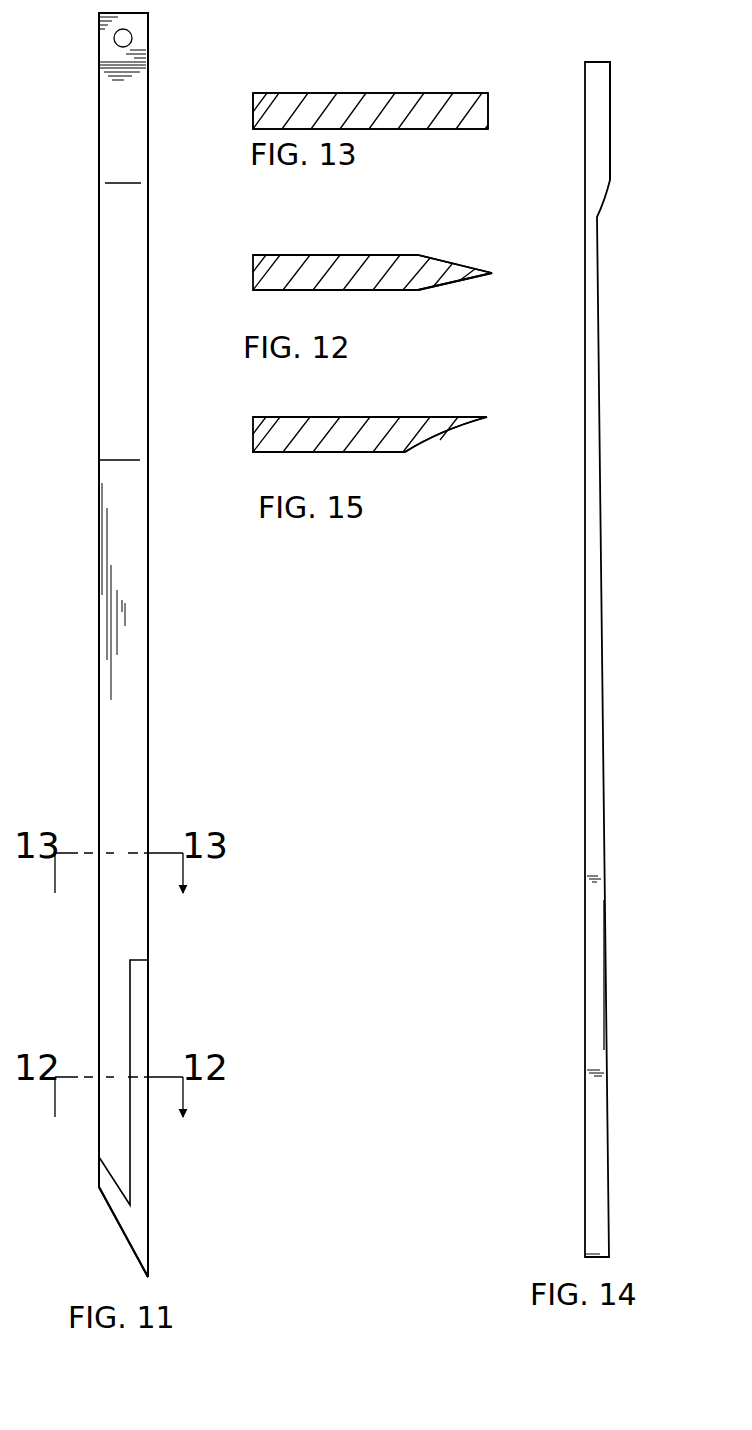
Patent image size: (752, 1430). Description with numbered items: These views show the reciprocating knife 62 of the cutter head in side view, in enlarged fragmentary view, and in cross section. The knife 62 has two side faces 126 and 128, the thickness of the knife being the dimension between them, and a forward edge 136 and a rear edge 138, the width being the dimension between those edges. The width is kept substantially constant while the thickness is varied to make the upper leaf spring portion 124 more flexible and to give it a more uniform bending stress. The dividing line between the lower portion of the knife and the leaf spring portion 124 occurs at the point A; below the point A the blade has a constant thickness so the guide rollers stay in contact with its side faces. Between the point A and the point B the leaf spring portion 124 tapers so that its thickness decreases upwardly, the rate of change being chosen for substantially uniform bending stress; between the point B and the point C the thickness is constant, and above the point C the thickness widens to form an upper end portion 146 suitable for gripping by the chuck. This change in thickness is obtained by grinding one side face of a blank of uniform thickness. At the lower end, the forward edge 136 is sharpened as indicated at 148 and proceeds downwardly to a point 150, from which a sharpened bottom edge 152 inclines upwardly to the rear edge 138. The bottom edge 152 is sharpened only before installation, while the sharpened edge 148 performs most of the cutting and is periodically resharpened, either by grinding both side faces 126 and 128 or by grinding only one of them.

In FIG. 11, the knife 62 is at (133, 933).
In FIG. 14, the knife 62 is at (598, 962).
In FIG. 11, the upper leaf spring portion 124 is at (123, 645).
In FIG. 13, the upper leaf spring portion 124 is at (370, 111).
In FIG. 12, the upper leaf spring portion 124 is at (372, 272).
In FIG. 15, the upper leaf spring portion 124 is at (370, 434).
In FIG. 14, the upper leaf spring portion 124 is at (600, 643).
In FIG. 11, the side face 126 is at (130, 637).
In FIG. 13, the side face 126 is at (410, 129).
In FIG. 12, the side face 126 is at (358, 290).
In FIG. 15, the side face 126 is at (340, 452).
In FIG. 14, the side face 126 is at (609, 1213).
In FIG. 13, the side face 128 is at (388, 93).
In FIG. 12, the side face 128 is at (370, 255).
In FIG. 15, the side face 128 is at (330, 417).
In FIG. 11, the forward edge 136 is at (148, 748).
In FIG. 13, the forward edge 136 is at (488, 108).
In FIG. 11, the rear edge 138 is at (99, 715).
In FIG. 13, the rear edge 138 is at (253, 108).
In FIG. 11, the upper end portion 146 is at (150, 40).
In FIG. 14, the upper end portion 146 is at (610, 112).
In FIG. 11, the sharpened edge 148 is at (140, 1001).
In FIG. 12, the sharpened edge 148 is at (472, 264).
In FIG. 15, the sharpened edge 148 is at (458, 414).
In FIG. 11, the point 150 is at (148, 1277).
In FIG. 11, the sharpened bottom edge 152 is at (118, 1227).
In FIG. 11, the point A is at (150, 460).
In FIG. 14, the point A is at (609, 1167).
In FIG. 11, the point B is at (152, 183).
In FIG. 14, the point B is at (600, 540).
In FIG. 11, the point C is at (150, 82).
In FIG. 14, the point C is at (598, 220).